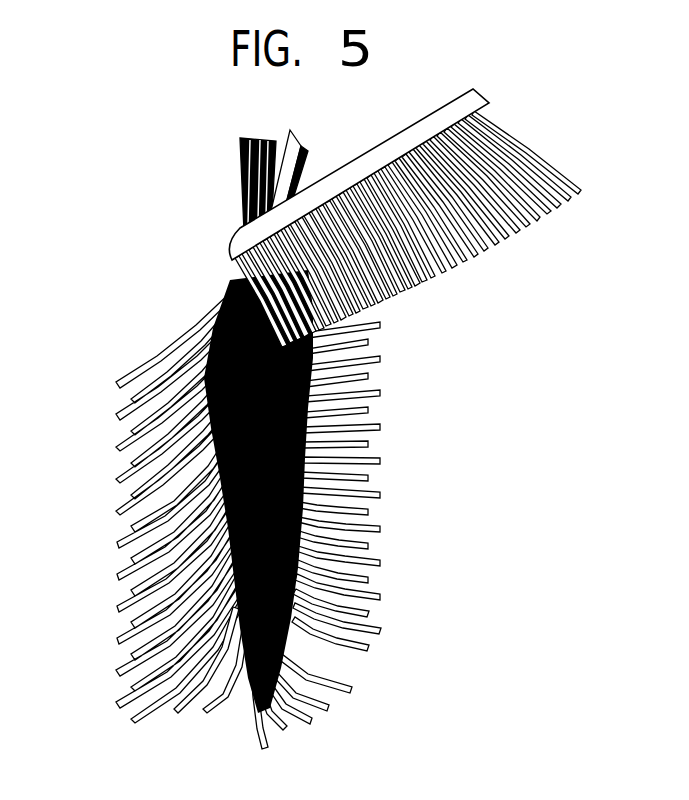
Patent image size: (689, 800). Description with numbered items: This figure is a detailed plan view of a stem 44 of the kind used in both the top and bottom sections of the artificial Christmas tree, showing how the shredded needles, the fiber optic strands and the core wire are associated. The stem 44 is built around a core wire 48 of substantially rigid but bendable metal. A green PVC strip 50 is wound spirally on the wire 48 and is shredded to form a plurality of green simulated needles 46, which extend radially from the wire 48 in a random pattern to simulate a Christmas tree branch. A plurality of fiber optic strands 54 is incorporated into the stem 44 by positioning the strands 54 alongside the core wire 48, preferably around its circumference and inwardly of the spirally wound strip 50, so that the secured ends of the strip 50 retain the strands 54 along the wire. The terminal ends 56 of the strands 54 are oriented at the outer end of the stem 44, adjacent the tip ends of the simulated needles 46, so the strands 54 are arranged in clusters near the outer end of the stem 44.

The stem 44 is at (146, 483).
The simulated needles 46 is at (493, 137).
The core wire 48 is at (283, 124).
The PVC strip 50 is at (331, 171).
The fiber optic strands 54 is at (230, 148).
The terminal ends 56 is at (210, 713).